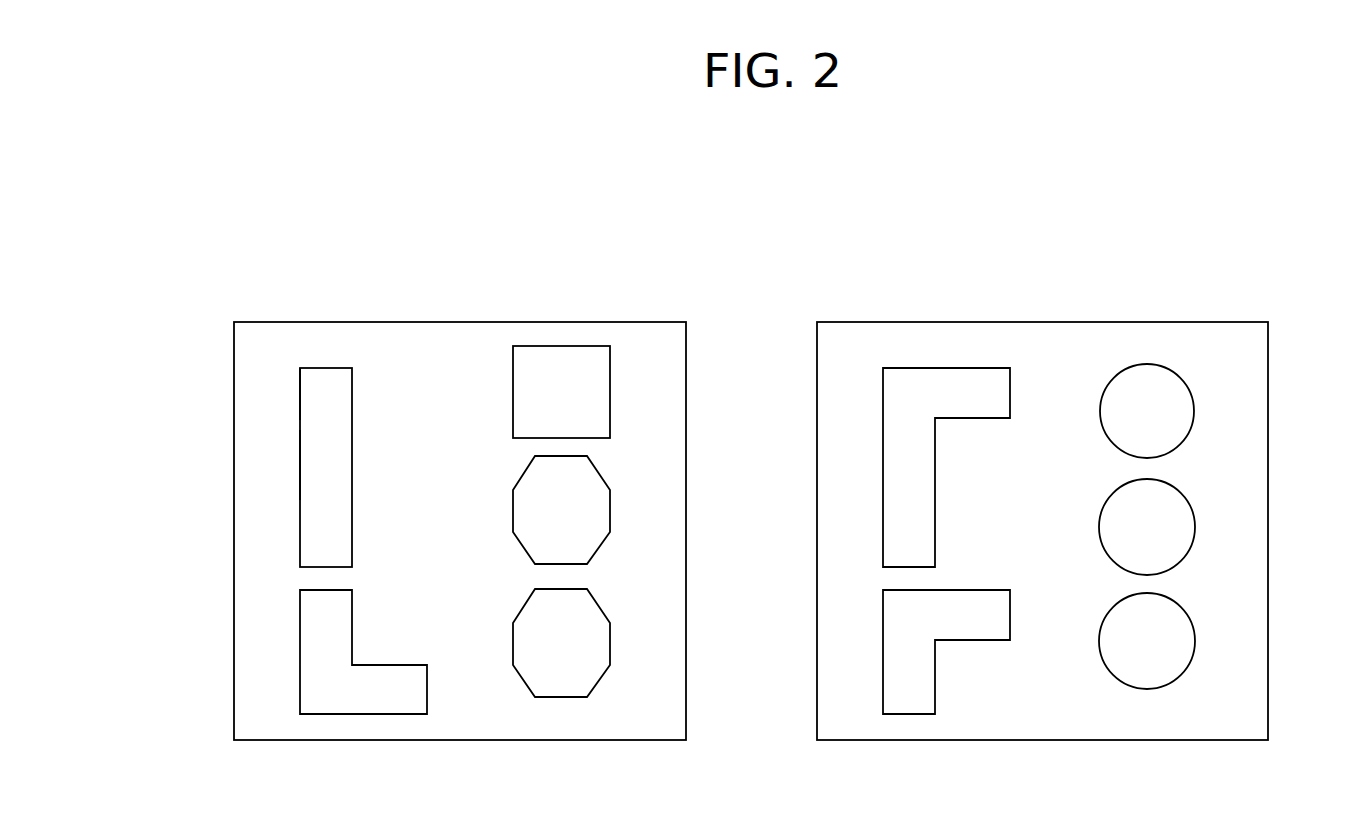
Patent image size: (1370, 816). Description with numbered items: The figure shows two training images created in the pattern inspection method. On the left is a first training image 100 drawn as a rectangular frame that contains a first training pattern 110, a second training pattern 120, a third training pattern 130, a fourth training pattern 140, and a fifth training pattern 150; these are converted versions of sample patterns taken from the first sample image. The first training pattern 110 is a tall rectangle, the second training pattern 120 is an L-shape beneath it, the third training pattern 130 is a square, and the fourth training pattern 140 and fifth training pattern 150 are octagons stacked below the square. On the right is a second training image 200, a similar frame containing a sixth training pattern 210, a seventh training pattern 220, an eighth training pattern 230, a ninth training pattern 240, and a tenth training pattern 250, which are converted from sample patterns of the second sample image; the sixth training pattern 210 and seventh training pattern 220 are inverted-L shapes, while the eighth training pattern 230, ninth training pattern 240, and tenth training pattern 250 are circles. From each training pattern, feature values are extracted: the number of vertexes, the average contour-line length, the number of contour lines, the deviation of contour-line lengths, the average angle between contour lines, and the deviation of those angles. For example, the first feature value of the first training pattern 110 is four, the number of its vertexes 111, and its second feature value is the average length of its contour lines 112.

The first training image 100 is at (460, 322).
The first training pattern 110 is at (326, 380).
The vertexes 111 is at (300, 366).
The contour lines 112 is at (300, 453).
The second training pattern 120 is at (316, 644).
The third training pattern 130 is at (595, 391).
The fourth training pattern 140 is at (595, 509).
The fifth training pattern 150 is at (595, 643).
The second training image 200 is at (1040, 322).
The sixth training pattern 210 is at (904, 380).
The seventh training pattern 220 is at (898, 614).
The eighth training pattern 230 is at (1178, 410).
The ninth training pattern 240 is at (1178, 526).
The tenth training pattern 250 is at (1178, 642).